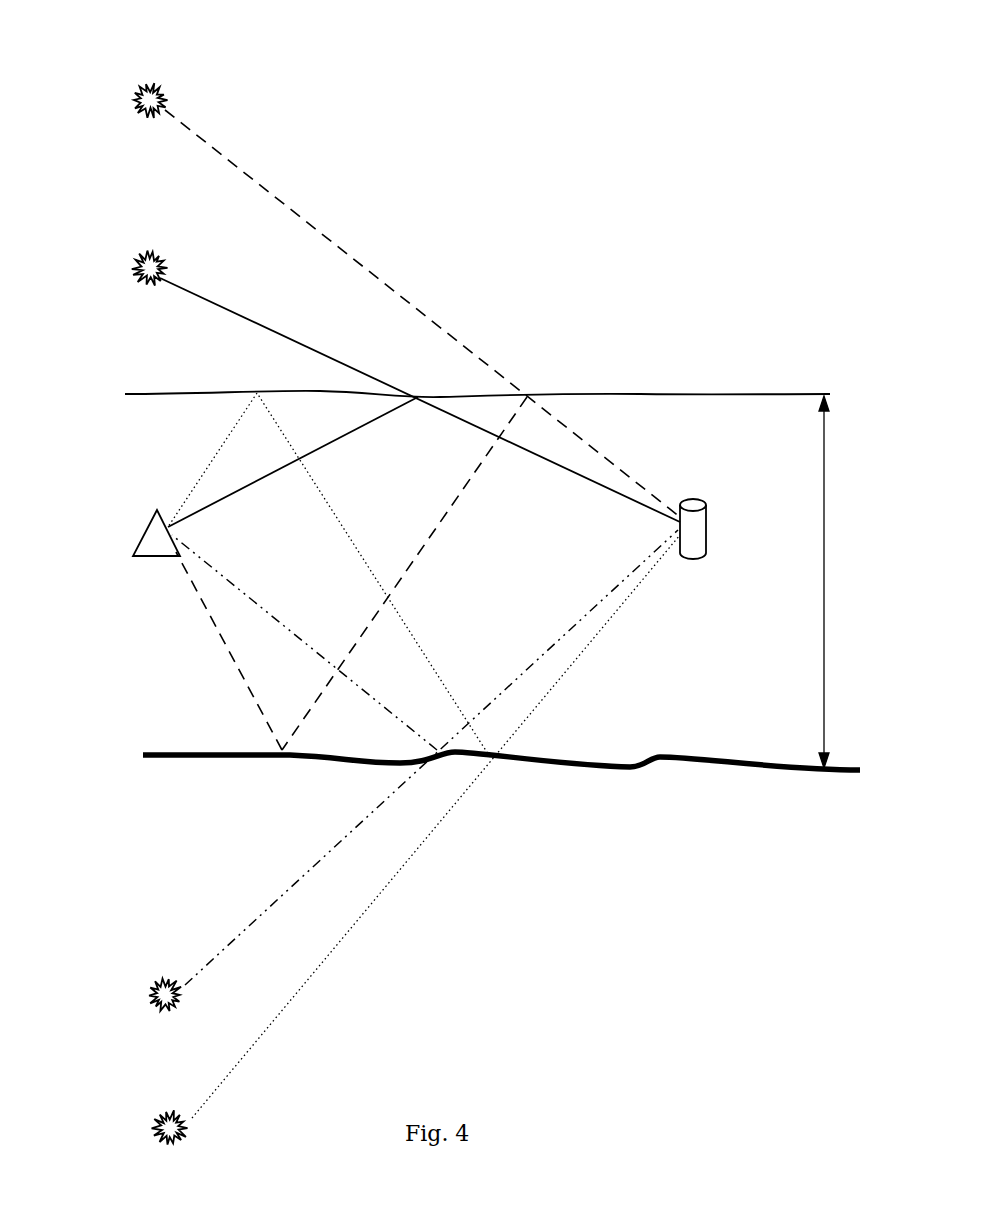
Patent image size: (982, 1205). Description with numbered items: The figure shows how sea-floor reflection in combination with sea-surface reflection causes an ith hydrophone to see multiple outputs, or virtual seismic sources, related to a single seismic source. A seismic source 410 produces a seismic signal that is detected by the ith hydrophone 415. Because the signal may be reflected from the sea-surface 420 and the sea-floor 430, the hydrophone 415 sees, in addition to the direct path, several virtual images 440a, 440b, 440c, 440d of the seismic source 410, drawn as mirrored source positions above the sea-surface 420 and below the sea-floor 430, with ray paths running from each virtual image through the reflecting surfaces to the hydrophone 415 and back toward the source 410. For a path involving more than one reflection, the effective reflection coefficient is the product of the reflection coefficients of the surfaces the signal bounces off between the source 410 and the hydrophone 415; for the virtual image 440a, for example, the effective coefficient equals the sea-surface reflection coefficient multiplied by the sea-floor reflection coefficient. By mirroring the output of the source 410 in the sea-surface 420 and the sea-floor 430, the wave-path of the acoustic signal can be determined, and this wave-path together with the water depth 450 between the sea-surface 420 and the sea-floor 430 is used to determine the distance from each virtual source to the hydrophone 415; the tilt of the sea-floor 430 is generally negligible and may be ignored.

The seismic source 410 is at (156, 515).
The ith hydrophone 415 is at (704, 522).
The sea-surface 420 is at (722, 395).
The sea-floor 430 is at (765, 772).
The virtual image 440a is at (157, 85).
The virtual image 440b is at (140, 253).
The virtual image 440c is at (165, 978).
The virtual image 440d is at (158, 1113).
The water depth 450 is at (824, 664).